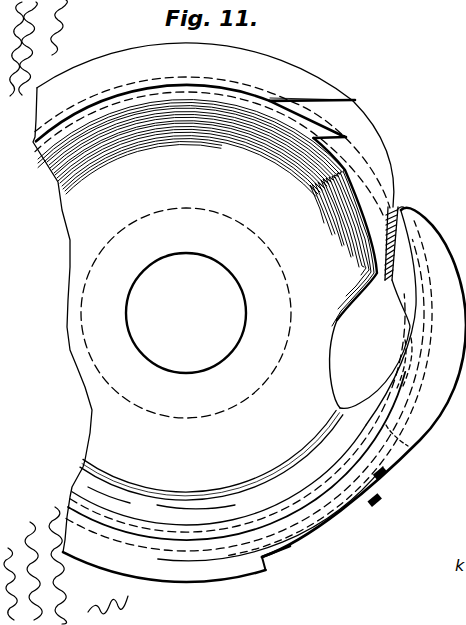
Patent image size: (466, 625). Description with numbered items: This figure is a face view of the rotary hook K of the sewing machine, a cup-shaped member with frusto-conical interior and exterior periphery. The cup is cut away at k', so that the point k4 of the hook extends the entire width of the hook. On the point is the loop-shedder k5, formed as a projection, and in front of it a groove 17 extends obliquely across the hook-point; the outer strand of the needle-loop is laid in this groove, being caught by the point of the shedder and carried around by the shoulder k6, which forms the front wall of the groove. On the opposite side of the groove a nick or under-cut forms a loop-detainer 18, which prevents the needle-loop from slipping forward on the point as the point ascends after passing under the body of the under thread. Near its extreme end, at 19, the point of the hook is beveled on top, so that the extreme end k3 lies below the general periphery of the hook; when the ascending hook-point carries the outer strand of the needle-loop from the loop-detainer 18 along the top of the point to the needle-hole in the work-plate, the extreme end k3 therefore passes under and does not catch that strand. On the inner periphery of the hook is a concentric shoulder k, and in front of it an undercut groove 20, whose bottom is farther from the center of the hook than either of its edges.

The rotary hook K is at (228, 312).
The concentric shoulder k is at (212, 232).
The undercut groove 20 is at (213, 84).
The cut-away portion k' is at (375, 344).
The extreme end of hook-point k3 is at (424, 191).
The beveled portion of hook-point 19 is at (364, 389).
The hook-point k4 is at (418, 352).
The loop-shedder k5 is at (395, 422).
The groove 17 is at (314, 520).
The loop-detainer 18 is at (378, 506).
The shoulder k6 is at (293, 548).